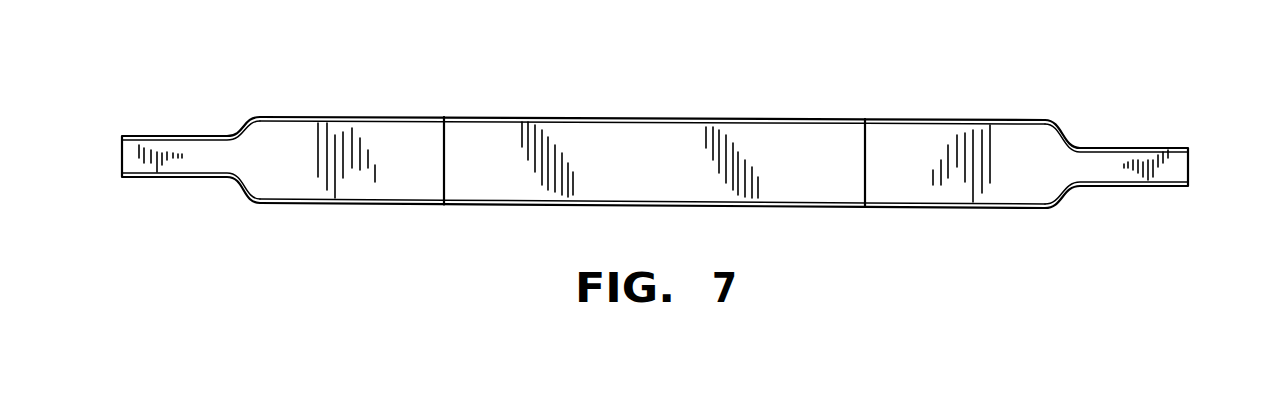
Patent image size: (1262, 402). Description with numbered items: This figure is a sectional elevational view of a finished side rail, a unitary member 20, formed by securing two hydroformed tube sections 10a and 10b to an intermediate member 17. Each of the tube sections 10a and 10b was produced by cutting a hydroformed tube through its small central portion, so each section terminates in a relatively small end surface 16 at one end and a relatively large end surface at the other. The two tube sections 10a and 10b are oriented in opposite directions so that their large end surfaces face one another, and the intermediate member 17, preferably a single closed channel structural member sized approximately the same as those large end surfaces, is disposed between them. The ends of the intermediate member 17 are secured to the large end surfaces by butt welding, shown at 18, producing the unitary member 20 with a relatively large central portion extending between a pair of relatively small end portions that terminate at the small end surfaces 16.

The tube section 10a is at (265, 132).
The tube section 10b is at (1000, 138).
The relatively small end surface 16 is at (117, 157).
The intermediate member 17 is at (603, 138).
The butt weld 18 is at (445, 160).
The unitary member 20 is at (645, 187).